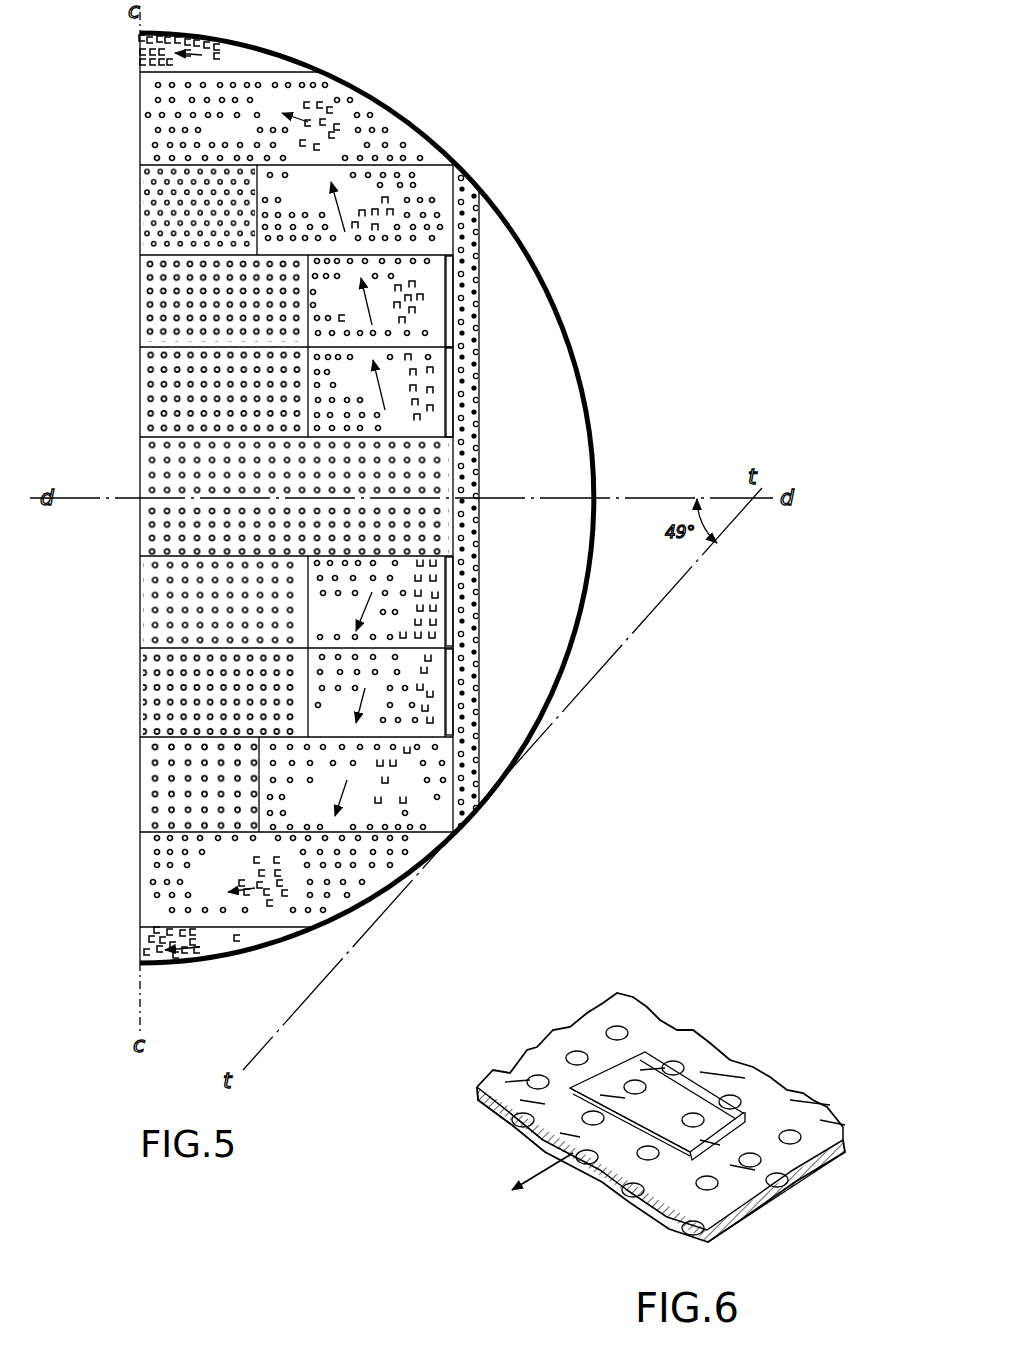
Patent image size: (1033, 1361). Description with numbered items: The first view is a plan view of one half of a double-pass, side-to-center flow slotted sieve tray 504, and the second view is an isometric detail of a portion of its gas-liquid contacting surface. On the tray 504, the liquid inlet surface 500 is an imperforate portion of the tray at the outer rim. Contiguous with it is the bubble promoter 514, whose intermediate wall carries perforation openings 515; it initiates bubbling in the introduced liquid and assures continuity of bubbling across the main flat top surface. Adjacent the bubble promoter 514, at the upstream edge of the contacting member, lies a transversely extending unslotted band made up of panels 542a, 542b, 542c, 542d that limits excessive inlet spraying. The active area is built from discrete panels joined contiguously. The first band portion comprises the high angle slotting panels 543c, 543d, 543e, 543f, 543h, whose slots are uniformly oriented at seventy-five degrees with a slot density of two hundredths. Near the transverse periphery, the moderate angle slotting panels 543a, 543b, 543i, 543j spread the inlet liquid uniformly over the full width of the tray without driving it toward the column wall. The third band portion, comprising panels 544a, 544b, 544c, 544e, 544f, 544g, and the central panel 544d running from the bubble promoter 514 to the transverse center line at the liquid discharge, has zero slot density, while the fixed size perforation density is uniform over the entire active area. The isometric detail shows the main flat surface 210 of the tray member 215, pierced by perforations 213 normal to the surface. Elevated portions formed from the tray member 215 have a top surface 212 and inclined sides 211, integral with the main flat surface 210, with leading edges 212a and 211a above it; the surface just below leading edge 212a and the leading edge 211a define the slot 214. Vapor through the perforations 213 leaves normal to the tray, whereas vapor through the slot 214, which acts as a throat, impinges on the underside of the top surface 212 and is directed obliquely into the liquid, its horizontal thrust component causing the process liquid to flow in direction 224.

In FIG. 5, the liquid inlet surface 500 is at (578, 424).
In FIG. 5, the tray 504 is at (503, 213).
In FIG. 5, the bubble promoter 514 is at (465, 810).
In FIG. 5, the perforation openings 515 is at (468, 775).
In FIG. 5, the panel 542a is at (448, 295).
In FIG. 5, the panel 542b is at (450, 365).
In FIG. 5, the panel 542c is at (450, 598).
In FIG. 5, the panel 542d is at (450, 702).
In FIG. 5, the moderate angle slotting panel 543a is at (272, 60).
In FIG. 5, the moderate angle slotting panel 543b is at (402, 132).
In FIG. 5, the high angle slotting panel 543c is at (418, 190).
In FIG. 5, the high angle slotting panel 543d is at (425, 275).
In FIG. 5, the high angle slotting panel 543e is at (397, 425).
In FIG. 5, the high angle slotting panel 543f is at (418, 557).
In FIG. 5, the high angle slotting panel 543h is at (440, 817).
In FIG. 5, the moderate angle slotting panel 543i is at (160, 908).
In FIG. 5, the moderate angle slotting panel 543j is at (142, 945).
In FIG. 5, the unslotted panel 544a is at (160, 213).
In FIG. 5, the unslotted panel 544b is at (160, 300).
In FIG. 5, the unslotted panel 544c is at (160, 390).
In FIG. 5, the central panel 544d is at (160, 530).
In FIG. 5, the unslotted panel 544e is at (160, 610).
In FIG. 5, the unslotted panel 544f is at (160, 700).
In FIG. 5, the unslotted panel 544g is at (160, 785).
In FIG. 6, the main flat surface 210 is at (494, 1076).
In FIG. 6, the inclined sides 211 is at (707, 1177).
In FIG. 6, the leading edge of inclined sides 211a is at (645, 1210).
In FIG. 6, the top surface 212 is at (572, 1083).
In FIG. 6, the leading edge of top surface 212a is at (616, 1183).
In FIG. 6, the perforations 213 is at (612, 1029).
In FIG. 6, the slot 214 is at (655, 1122).
In FIG. 6, the tray member 215 is at (468, 1097).
In FIG. 6, the direction of liquid flow 224 is at (523, 1190).